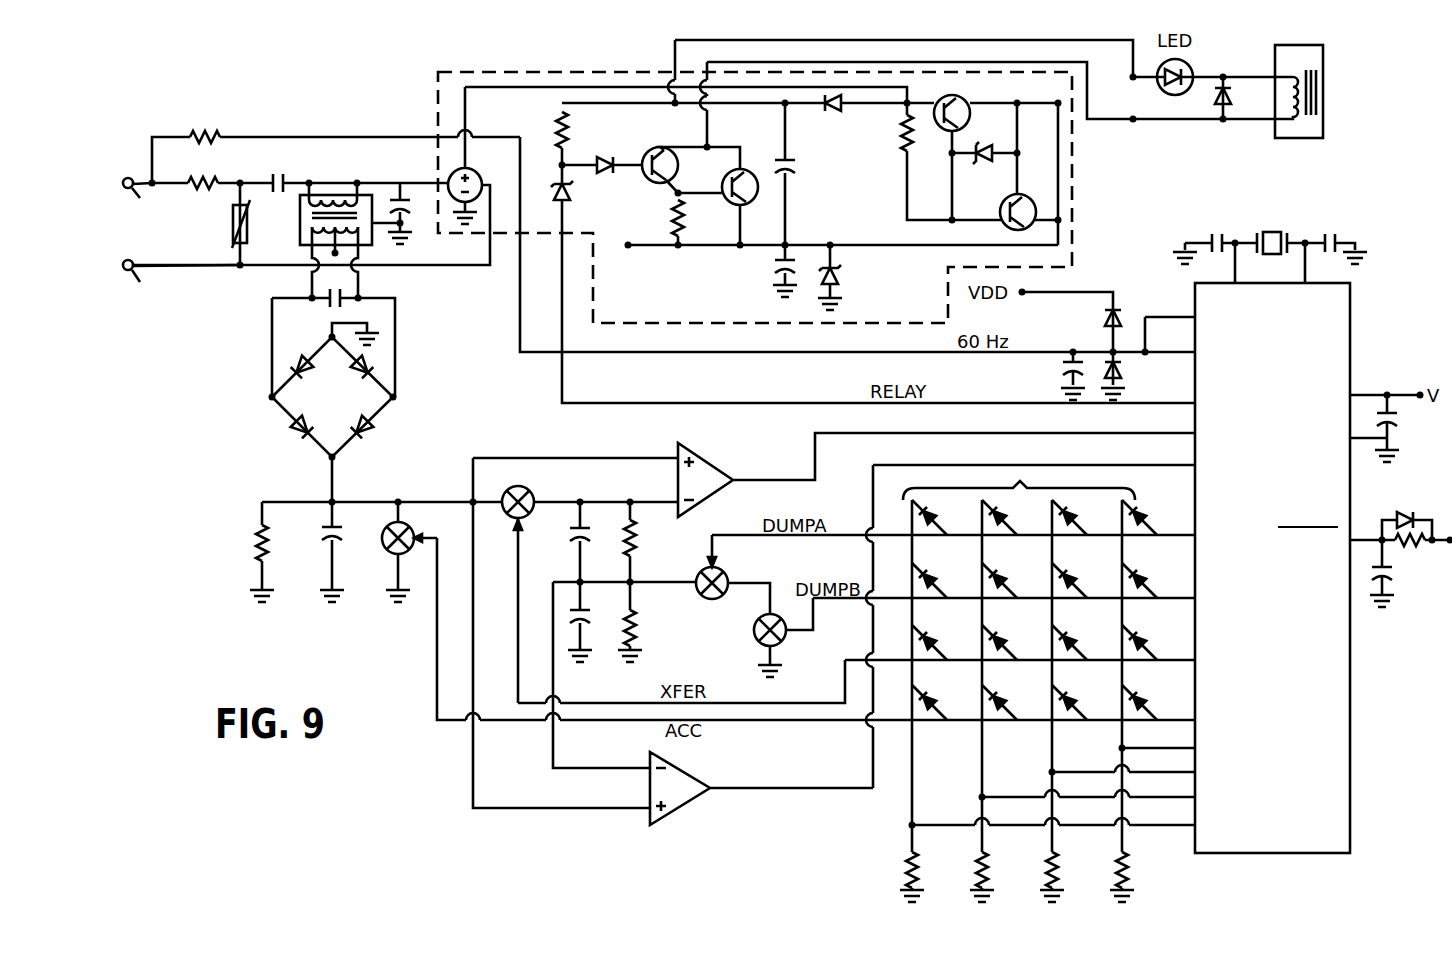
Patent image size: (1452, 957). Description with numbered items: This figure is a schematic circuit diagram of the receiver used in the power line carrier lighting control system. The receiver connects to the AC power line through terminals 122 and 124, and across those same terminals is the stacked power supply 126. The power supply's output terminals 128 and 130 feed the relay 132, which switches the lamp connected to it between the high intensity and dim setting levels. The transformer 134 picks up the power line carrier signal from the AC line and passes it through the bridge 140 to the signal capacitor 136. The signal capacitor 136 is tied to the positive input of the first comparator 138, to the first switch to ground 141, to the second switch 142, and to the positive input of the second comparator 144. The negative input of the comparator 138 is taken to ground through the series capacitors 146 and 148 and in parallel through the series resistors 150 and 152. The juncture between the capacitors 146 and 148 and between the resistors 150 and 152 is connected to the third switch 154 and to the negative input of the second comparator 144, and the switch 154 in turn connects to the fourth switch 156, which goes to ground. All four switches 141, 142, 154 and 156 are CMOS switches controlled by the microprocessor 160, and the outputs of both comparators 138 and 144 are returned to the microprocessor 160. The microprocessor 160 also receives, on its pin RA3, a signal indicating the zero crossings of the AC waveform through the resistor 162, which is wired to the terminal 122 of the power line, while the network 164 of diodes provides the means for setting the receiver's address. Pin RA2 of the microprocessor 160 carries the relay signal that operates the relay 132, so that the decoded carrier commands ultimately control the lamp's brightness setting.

The terminal 122 is at (142, 203).
The terminal 124 is at (181, 284).
The stacked power supply 126 is at (436, 102).
The terminal of the power supply 128 is at (1133, 121).
The terminal of the power supply 130 is at (1133, 80).
The relay 132 is at (1323, 103).
The transformer 134 is at (402, 246).
The signal capacitor 136 is at (328, 546).
The first comparator 138 is at (727, 484).
The bridge 140 is at (345, 412).
The first switch to ground 141 is at (412, 540).
The second switch 142 is at (533, 503).
The second comparator 144 is at (696, 808).
The capacitor 146 is at (576, 536).
The capacitor 148 is at (594, 622).
The resistor 150 is at (640, 540).
The resistor 152 is at (642, 625).
The third switch 154 is at (728, 575).
The fourth switch 156 is at (752, 646).
The microprocessor 160 is at (1352, 655).
The resistor 162 is at (208, 133).
The network 164 is at (1047, 685).